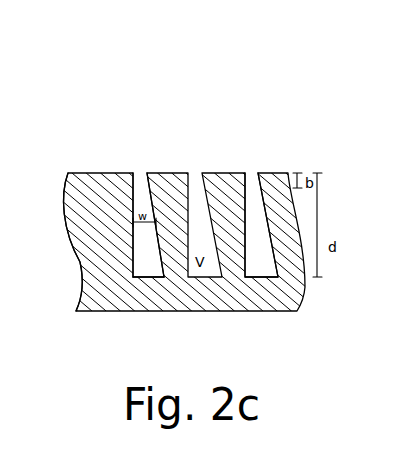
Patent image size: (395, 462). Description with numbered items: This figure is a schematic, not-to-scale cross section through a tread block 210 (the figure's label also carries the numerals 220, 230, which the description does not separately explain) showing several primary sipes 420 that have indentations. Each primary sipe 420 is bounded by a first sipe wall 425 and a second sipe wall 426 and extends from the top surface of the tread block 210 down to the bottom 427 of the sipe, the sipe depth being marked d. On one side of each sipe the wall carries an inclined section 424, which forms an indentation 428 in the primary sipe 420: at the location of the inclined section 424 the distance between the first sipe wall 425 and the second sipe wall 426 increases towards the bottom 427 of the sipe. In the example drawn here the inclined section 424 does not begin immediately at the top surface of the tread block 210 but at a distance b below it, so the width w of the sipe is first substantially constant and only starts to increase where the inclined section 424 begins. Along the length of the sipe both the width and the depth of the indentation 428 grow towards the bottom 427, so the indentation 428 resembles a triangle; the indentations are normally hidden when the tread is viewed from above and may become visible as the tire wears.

The tread block 210 is at (197, 189).
The rotor blade ring 220 is at (197, 189).
The rotor blade ring 230 is at (244, 140).
The primary sipe 420 is at (138, 164).
The inclined section 424 is at (82, 262).
The first sipe wall 425 is at (132, 226).
The second sipe wall 426 is at (148, 197).
The bottom of the sipe 427 is at (150, 270).
The indentation 428 is at (263, 257).